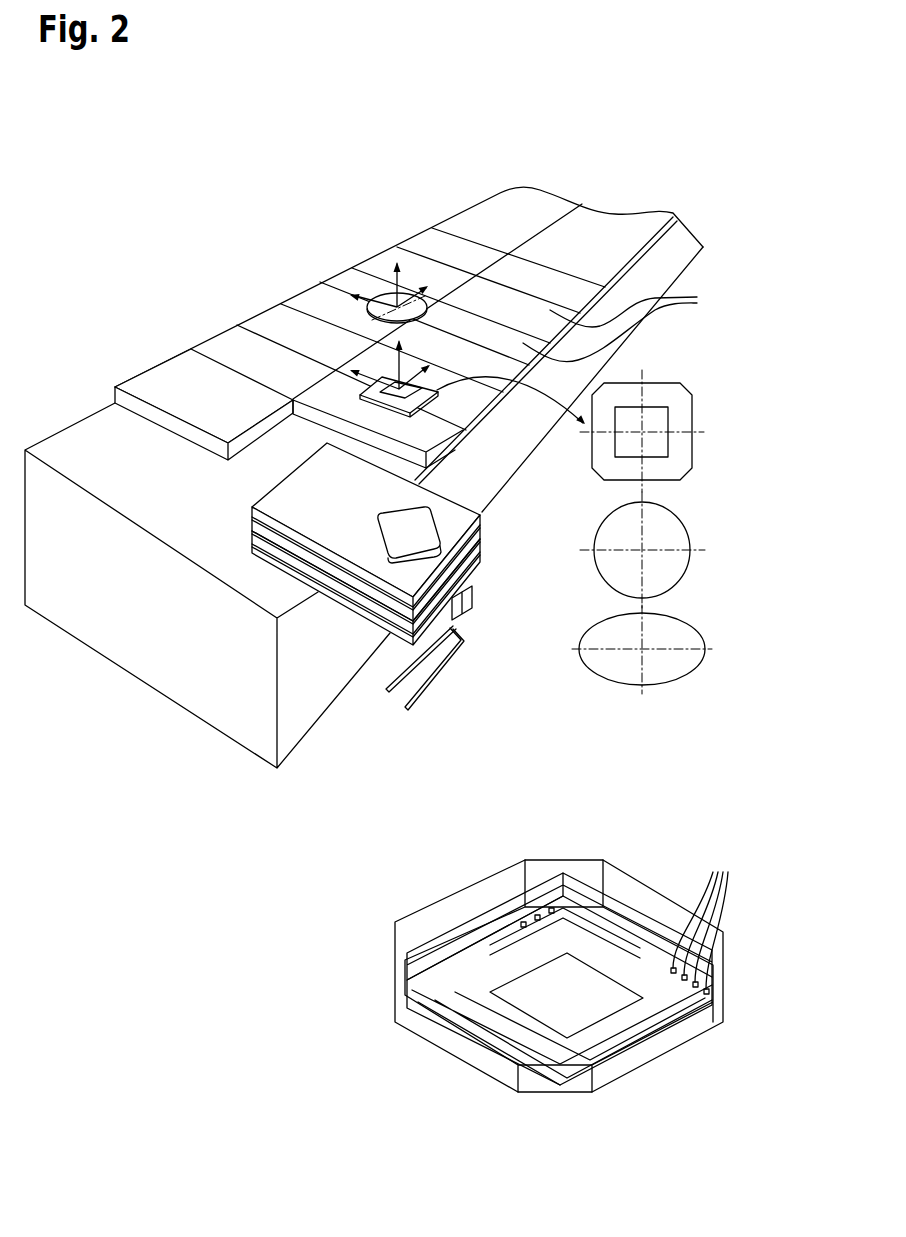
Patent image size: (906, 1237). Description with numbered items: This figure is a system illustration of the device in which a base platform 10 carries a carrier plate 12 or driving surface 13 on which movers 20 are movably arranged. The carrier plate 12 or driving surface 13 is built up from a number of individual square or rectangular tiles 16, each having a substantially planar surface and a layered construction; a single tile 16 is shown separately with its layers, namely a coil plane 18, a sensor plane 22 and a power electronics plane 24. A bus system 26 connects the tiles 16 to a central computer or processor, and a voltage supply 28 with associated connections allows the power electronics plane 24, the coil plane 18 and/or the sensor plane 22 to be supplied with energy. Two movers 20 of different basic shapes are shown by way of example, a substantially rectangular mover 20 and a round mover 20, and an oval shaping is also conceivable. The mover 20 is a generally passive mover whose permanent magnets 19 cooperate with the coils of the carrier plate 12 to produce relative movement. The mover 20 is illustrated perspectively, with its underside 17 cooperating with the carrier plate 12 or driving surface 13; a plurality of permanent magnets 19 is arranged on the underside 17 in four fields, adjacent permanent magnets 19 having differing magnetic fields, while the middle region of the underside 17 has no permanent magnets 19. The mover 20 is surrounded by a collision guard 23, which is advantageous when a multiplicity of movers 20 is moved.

The base platform 10 is at (107, 442).
The carrier plate 12 is at (230, 362).
The driving surface 13 is at (408, 180).
The tile 16 is at (362, 768).
The underside 17 is at (545, 1115).
The coil plane 18 is at (481, 556).
The permanent magnets 19 is at (613, 940).
The mover 20 is at (385, 295).
The sensor plane 22 is at (480, 570).
The collision guard 23 is at (404, 940).
The power electronics plane 24 is at (475, 597).
The bus system 26 is at (390, 693).
The voltage supply 28 is at (428, 680).